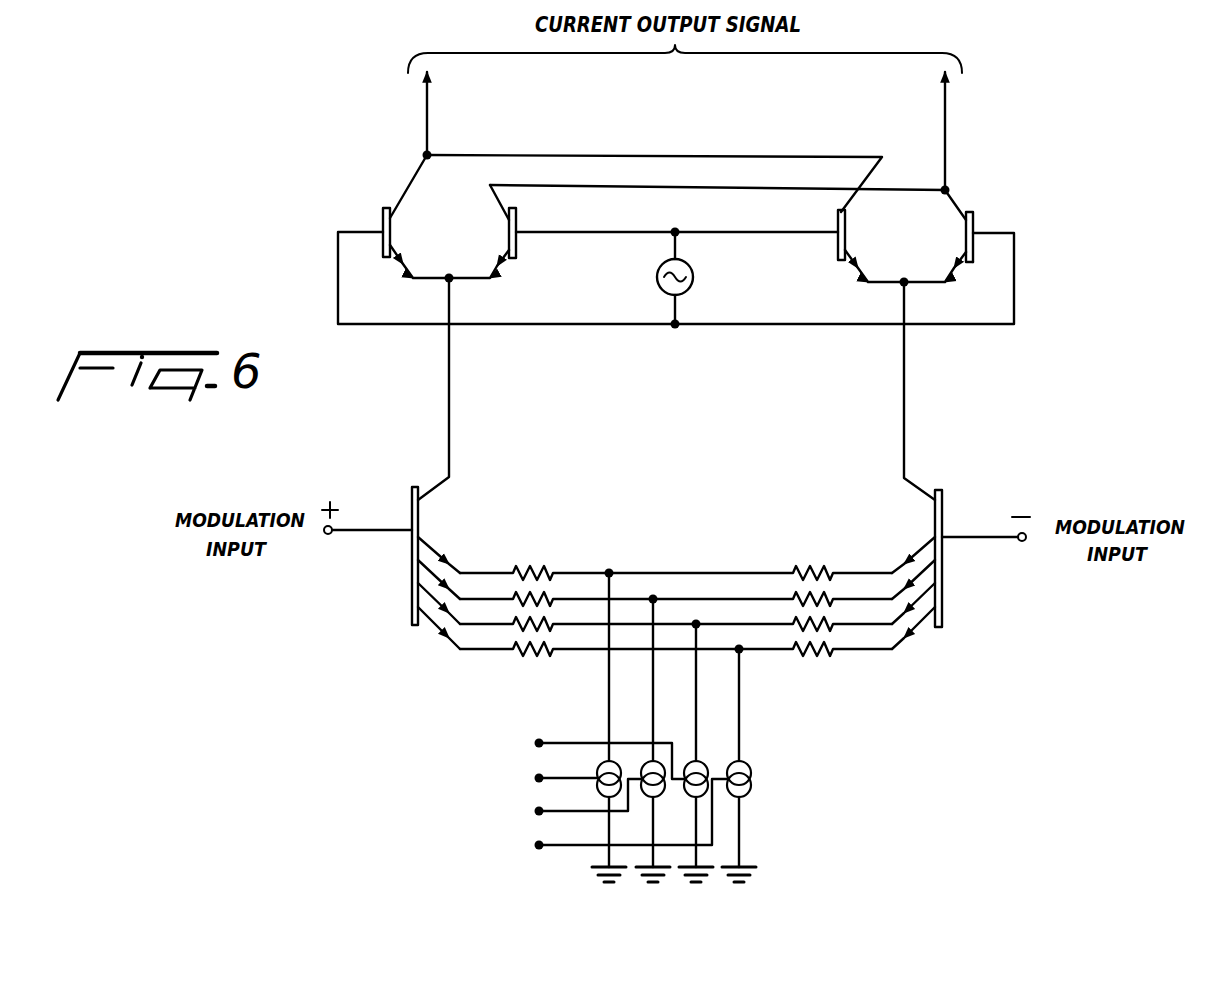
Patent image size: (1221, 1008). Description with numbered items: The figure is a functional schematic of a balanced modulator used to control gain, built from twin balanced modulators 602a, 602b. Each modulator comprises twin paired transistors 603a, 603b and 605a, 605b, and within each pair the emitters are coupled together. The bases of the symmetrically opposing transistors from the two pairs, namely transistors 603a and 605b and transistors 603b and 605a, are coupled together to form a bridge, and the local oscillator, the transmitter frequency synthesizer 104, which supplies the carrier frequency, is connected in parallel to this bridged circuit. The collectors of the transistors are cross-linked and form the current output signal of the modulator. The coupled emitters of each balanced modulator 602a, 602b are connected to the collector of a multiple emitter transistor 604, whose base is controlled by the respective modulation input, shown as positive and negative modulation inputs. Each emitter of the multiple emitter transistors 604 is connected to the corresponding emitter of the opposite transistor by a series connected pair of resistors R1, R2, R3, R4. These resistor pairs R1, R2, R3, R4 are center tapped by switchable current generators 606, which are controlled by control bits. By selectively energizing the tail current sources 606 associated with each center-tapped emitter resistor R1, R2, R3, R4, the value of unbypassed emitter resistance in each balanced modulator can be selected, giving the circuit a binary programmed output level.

The balanced modulator 602a is at (402, 196).
The balanced modulator 602b is at (951, 205).
The transistor 603a is at (382, 258).
The transistor 603b is at (518, 221).
The transistor 605a is at (838, 213).
The transistor 605b is at (972, 262).
The transmitter frequency synthesizer 104 is at (657, 277).
The multiple emitter transistor 604 is at (945, 506).
The switchable current generators 606 is at (767, 742).
The emitter resistor R1 is at (515, 571).
The emitter resistor R2 is at (549, 598).
The emitter resistor R3 is at (517, 624).
The emitter resistor R4 is at (537, 651).